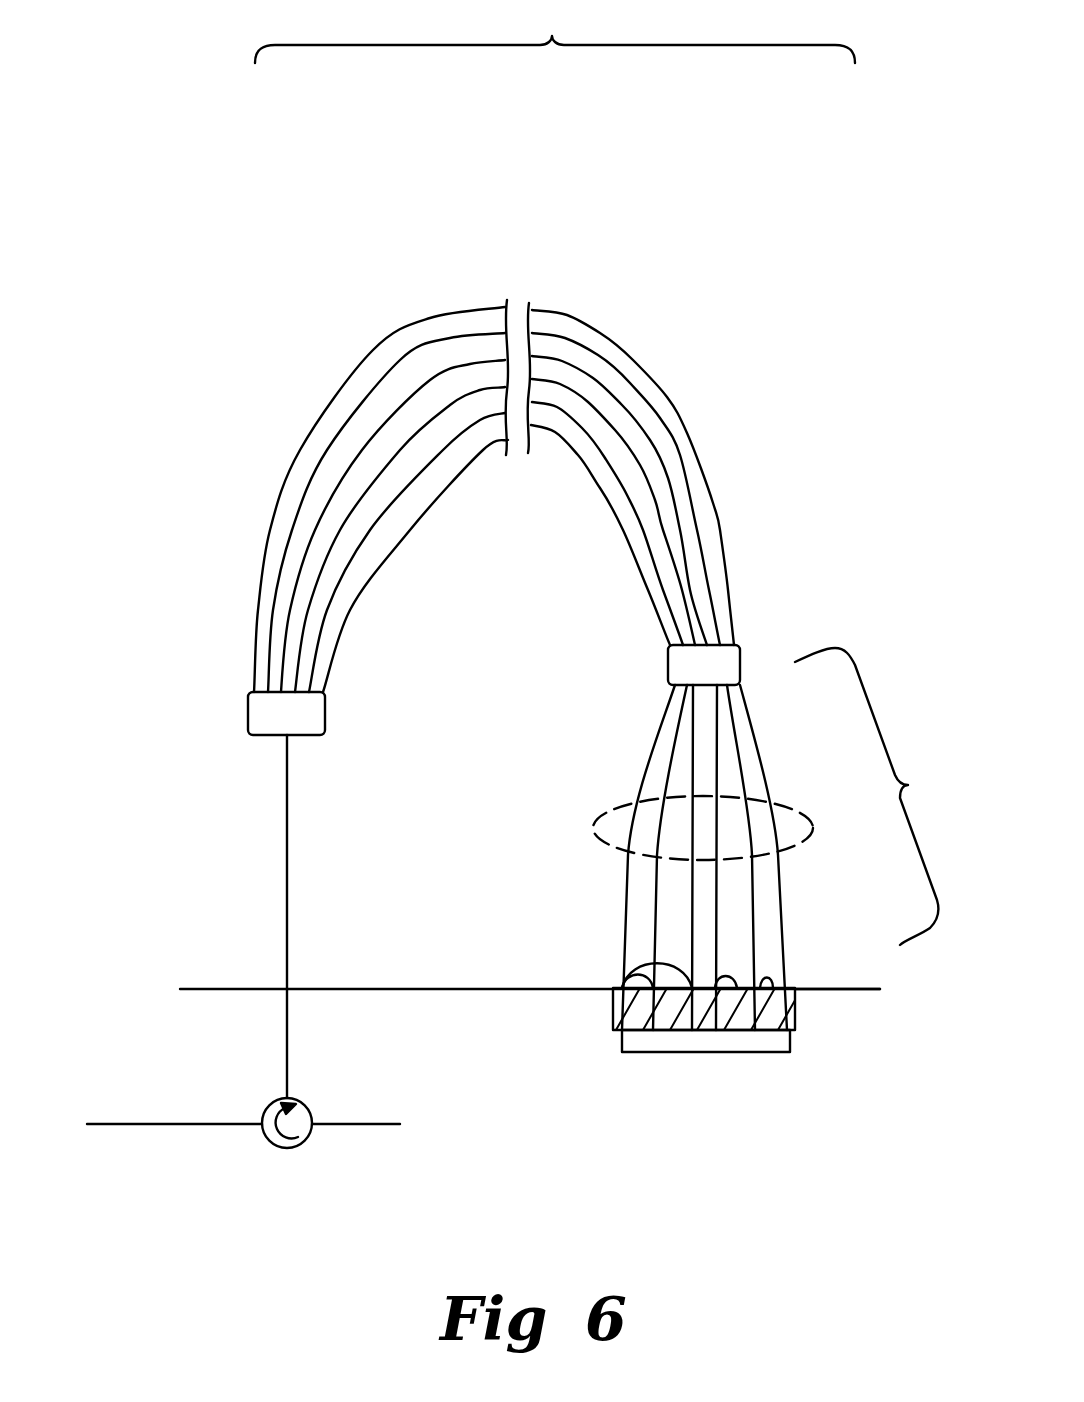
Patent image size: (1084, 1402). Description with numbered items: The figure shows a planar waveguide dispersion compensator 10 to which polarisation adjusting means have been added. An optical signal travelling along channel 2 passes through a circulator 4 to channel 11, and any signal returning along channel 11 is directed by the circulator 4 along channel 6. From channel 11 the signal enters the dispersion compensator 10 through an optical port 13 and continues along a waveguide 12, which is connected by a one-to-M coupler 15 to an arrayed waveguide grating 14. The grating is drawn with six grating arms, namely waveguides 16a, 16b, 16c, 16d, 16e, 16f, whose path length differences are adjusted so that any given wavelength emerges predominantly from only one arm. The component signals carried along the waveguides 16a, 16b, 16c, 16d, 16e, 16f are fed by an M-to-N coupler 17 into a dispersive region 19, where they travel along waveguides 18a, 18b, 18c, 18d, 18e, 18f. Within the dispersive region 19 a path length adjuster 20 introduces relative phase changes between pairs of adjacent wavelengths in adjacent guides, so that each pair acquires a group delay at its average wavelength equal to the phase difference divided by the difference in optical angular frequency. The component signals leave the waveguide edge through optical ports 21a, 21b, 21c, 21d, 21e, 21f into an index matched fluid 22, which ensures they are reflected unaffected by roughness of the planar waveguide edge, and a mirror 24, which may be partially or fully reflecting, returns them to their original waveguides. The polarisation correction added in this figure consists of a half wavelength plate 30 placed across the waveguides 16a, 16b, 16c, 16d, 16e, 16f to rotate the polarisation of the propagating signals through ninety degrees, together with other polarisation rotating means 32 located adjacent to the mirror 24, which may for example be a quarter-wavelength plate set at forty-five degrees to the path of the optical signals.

The channel 2 is at (167, 1126).
The circulator 4 is at (290, 1147).
The channel 6 is at (367, 1127).
The dispersion compensator 10 is at (857, 366).
The channel 11 is at (289, 1012).
The waveguide 12 is at (287, 897).
The optical port 13 is at (268, 1002).
The arrayed waveguide grating 14 is at (555, 33).
The 1:M coupler 15 is at (268, 725).
The waveguide 16a is at (487, 447).
The waveguide 16b is at (450, 427).
The waveguide 16c is at (413, 437).
The waveguide 16d is at (367, 453).
The waveguide 16e is at (331, 458).
The waveguide 16f is at (302, 460).
The M:N coupler 17 is at (728, 660).
The waveguide 18a is at (660, 713).
The waveguide 18b is at (675, 735).
The waveguide 18c is at (693, 760).
The waveguide 18d is at (717, 780).
The waveguide 18e is at (740, 748).
The waveguide 18f is at (748, 710).
The dispersive region 19 is at (871, 796).
The path length adjuster 20 is at (808, 827).
The optical port 21a is at (617, 992).
The optical port 21b is at (624, 978).
The optical port 21c is at (648, 962).
The optical port 21d is at (735, 990).
The optical port 21e is at (770, 990).
The optical port 21f is at (798, 988).
The index matched fluid 22 is at (795, 1003).
The mirror 24 is at (790, 1045).
The half wavelength plate 30 is at (518, 300).
The polarisation rotating means 32 is at (660, 1040).